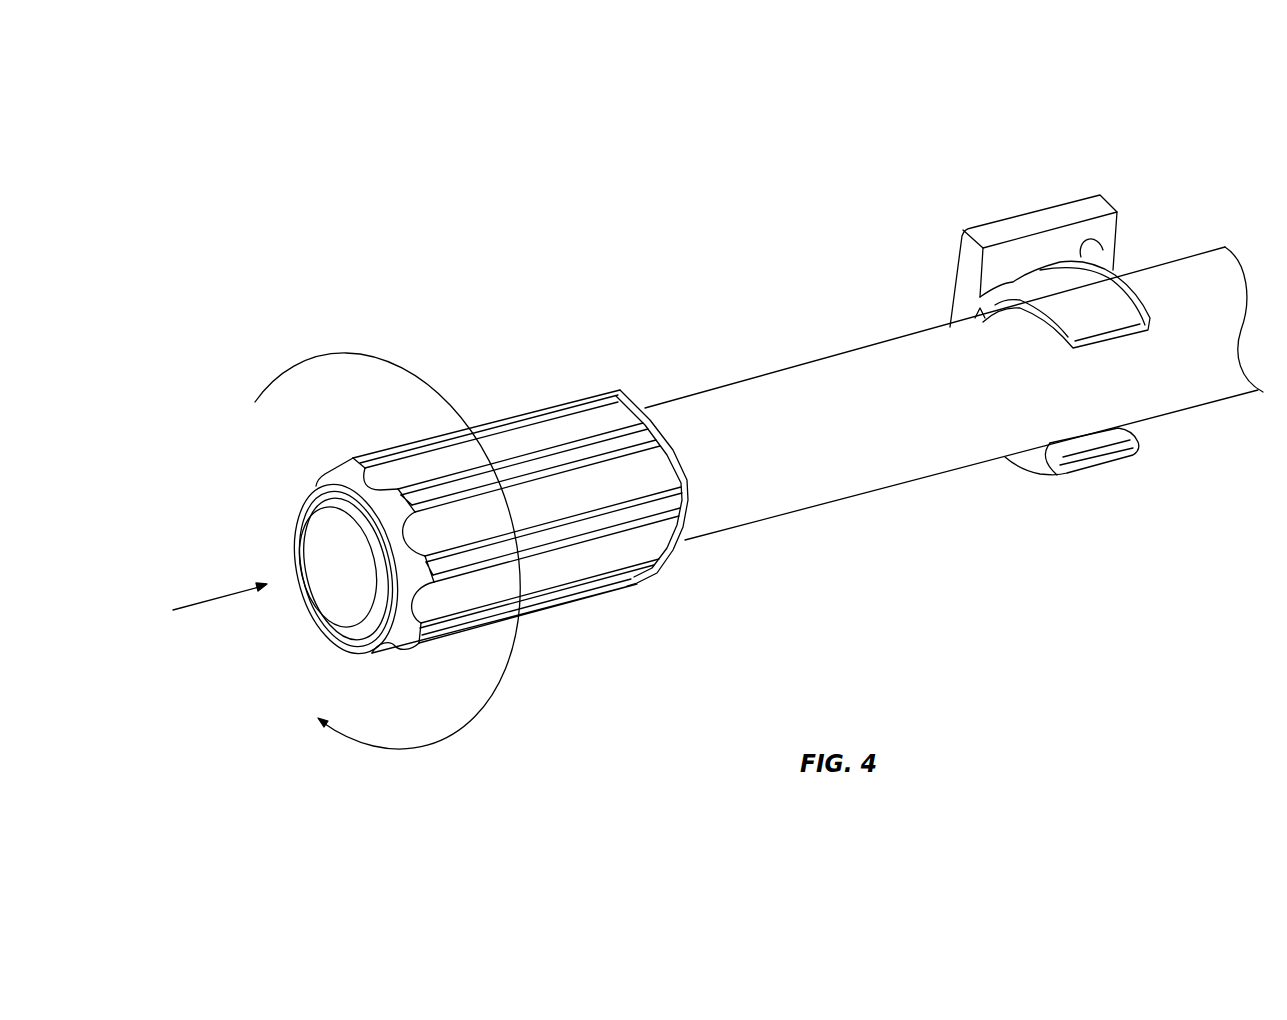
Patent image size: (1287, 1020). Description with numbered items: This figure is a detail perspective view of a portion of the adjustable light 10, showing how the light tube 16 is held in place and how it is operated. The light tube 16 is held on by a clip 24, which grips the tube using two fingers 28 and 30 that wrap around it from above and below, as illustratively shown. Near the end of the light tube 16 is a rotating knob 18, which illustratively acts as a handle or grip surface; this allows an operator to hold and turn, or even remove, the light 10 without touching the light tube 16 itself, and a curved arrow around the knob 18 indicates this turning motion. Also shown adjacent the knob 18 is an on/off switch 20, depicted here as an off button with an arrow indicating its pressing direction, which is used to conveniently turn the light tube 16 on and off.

The adjustable light 10 is at (932, 142).
The light tube 16 is at (798, 368).
The rotating knob 18 is at (547, 408).
The on/off switch 20 is at (160, 682).
The clip 24 is at (1047, 205).
The finger 28 is at (1100, 288).
The finger 30 is at (1097, 470).